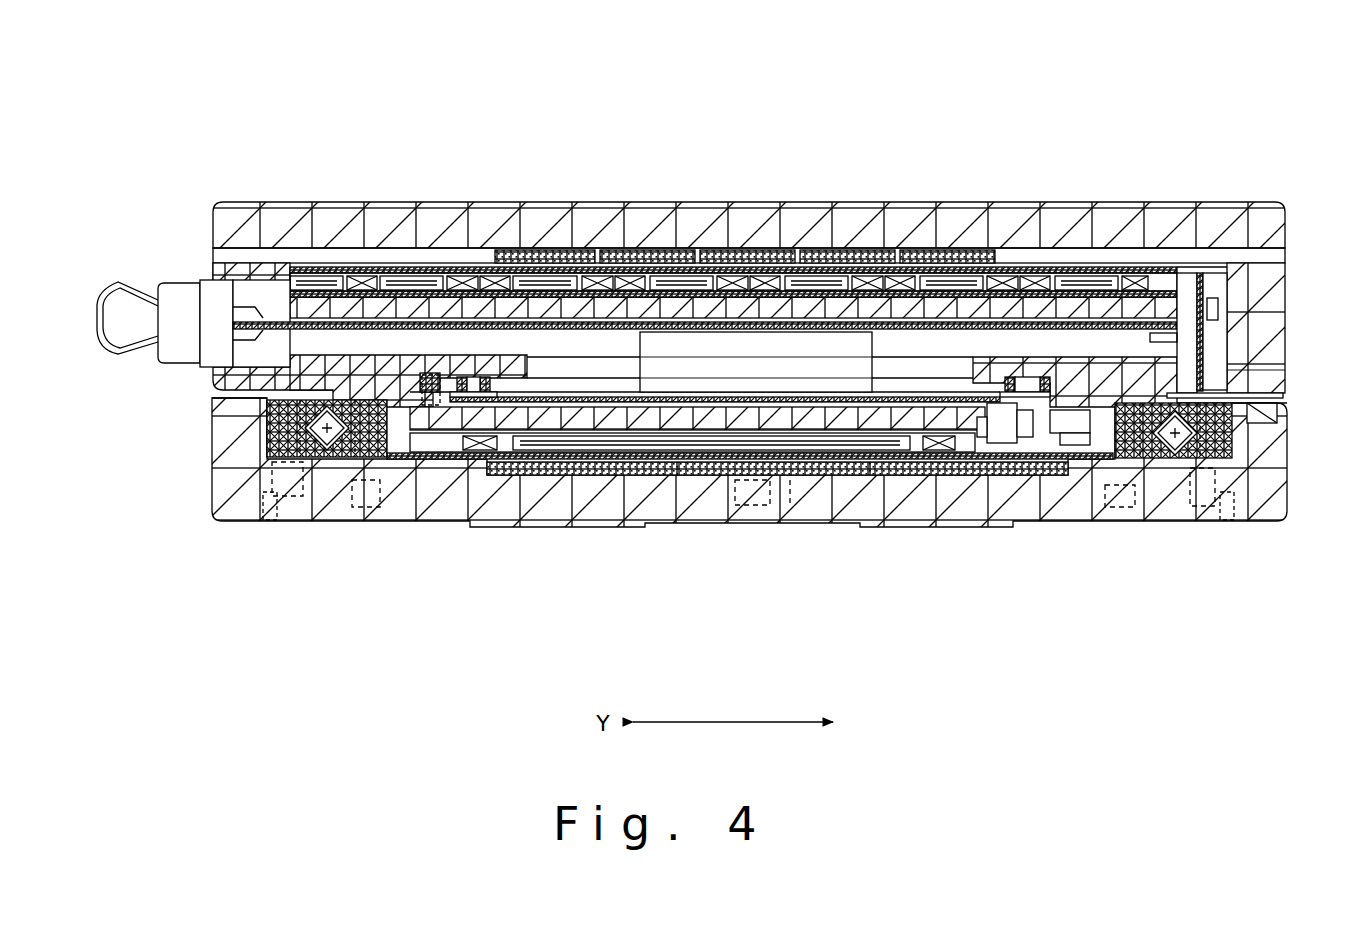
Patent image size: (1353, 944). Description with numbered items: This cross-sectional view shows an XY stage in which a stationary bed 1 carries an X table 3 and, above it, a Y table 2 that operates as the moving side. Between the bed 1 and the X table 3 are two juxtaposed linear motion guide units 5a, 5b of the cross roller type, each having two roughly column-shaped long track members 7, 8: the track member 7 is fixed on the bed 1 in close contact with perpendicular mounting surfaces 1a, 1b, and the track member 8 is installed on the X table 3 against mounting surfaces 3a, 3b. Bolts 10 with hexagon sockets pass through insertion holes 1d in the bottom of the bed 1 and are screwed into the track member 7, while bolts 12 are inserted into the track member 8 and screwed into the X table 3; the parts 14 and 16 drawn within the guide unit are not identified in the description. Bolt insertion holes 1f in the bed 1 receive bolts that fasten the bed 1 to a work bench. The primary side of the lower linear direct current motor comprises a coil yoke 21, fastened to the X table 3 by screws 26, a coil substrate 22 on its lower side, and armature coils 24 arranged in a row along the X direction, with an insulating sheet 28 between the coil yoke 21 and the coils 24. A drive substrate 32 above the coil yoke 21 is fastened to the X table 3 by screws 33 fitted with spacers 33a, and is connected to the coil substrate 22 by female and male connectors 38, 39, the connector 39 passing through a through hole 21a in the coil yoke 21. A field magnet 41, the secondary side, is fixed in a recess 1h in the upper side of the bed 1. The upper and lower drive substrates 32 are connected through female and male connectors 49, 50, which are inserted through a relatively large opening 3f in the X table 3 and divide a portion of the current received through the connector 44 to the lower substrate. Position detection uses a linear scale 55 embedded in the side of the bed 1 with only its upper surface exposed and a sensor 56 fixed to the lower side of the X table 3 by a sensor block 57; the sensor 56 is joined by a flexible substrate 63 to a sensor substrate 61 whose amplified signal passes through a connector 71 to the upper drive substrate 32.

The bed 1 is at (1302, 522).
The mounting surface 1a is at (263, 440).
The mounting surface 1b is at (262, 462).
The insertion hole 1d is at (262, 540).
The bolt insertion hole 1f is at (378, 540).
The recess 1h is at (790, 486).
The Y table 2 is at (1280, 203).
The X table 3 is at (1289, 284).
The mounting surface 3a is at (335, 300).
The mounting surface 3b is at (290, 268).
The opening 3f is at (538, 385).
The linear motion guide unit 5a is at (1292, 508).
The linear motion guide unit 5b is at (228, 515).
The track member 7 is at (212, 400).
The track member 8 is at (355, 465).
The bolt 10 is at (240, 527).
The bolt 12 is at (325, 530).
The linear guide block 14 is at (267, 420).
The roller 16 is at (300, 500).
The coil yoke 21 is at (565, 300).
The yoke plate 21a is at (925, 452).
The coil substrate 22 is at (818, 262).
The armature coil 24 is at (357, 290).
The screw 26 is at (428, 440).
The insulating sheet 28 is at (940, 300).
The drive substrate 32 is at (420, 300).
The screw 33 is at (460, 392).
The spacer 33a is at (472, 430).
The female connector 38 is at (955, 460).
The male connector 39 is at (985, 442).
The field magnet 41 is at (687, 247).
The connector 44 is at (172, 281).
The female connector 49 is at (830, 380).
The male connector 50 is at (850, 345).
The linear scale 55 is at (1262, 420).
The sensor 56 is at (1270, 398).
The sensor block 57 is at (1273, 380).
The sensor substrate 61 is at (1200, 323).
The flexible substrate 63 is at (1227, 372).
The connector 71 is at (1210, 340).